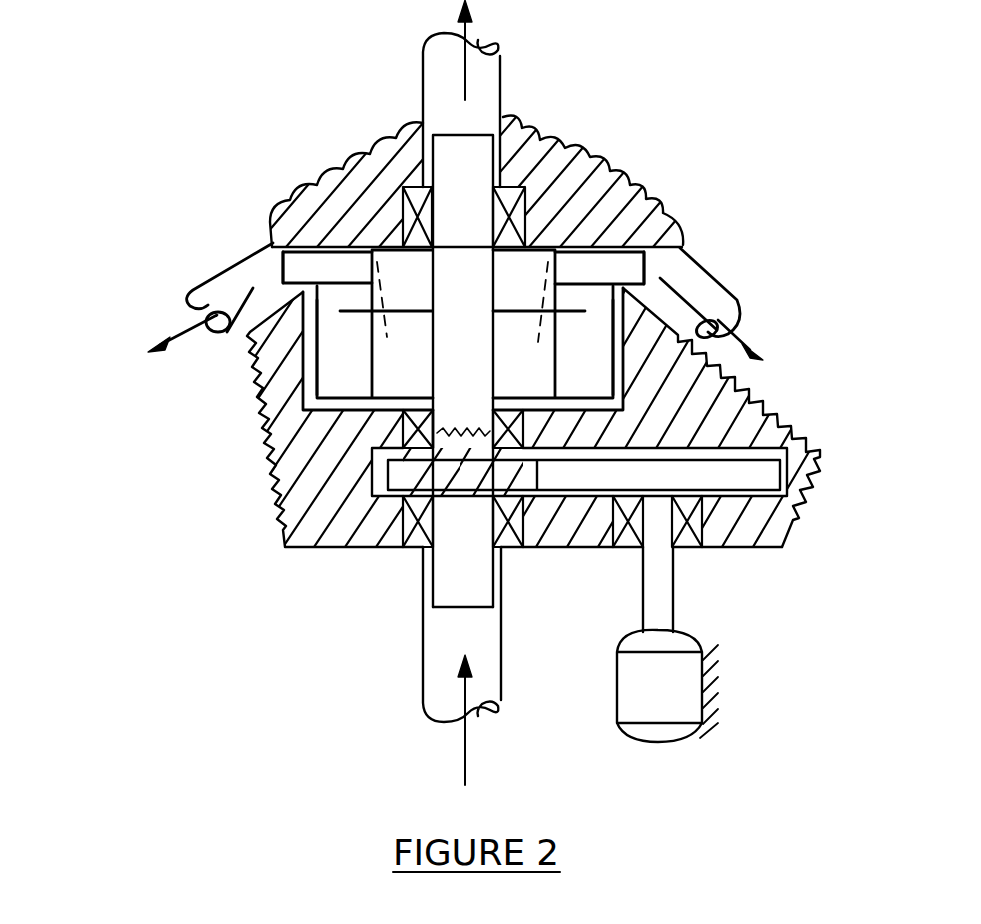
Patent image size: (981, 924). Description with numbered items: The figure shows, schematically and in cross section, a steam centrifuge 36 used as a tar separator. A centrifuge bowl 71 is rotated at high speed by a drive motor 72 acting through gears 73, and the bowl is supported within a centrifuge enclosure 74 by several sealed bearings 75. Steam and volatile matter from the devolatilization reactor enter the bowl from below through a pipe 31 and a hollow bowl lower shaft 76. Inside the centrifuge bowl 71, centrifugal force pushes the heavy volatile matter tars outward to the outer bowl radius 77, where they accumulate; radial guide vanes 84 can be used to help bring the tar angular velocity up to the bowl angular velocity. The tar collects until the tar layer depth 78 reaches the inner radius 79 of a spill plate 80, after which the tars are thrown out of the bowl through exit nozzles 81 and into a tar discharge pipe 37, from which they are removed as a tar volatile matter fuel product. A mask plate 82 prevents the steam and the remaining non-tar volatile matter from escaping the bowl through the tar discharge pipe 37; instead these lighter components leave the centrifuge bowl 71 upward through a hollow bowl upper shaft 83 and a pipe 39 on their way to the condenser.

The pipe 31 is at (430, 690).
The steam centrifuge 36 is at (404, 432).
The tar discharge pipe 37 is at (230, 280).
The pipe 39 is at (503, 80).
The centrifuge bowl 71 is at (587, 362).
The drive motor 72 is at (648, 710).
The gears 73 is at (745, 470).
The centrifuge enclosure 74 is at (342, 505).
The sealed bearings 75 is at (527, 197).
The hollow bowl lower shaft 76 is at (447, 590).
The outer bowl radius 77 is at (383, 378).
The tar layer depth 78 is at (388, 374).
The inner radius 79 is at (362, 276).
The spill plate 80 is at (623, 273).
The exit nozzles 81 is at (295, 274).
The mask plate 82 is at (503, 308).
The hollow bowl upper shaft 83 is at (462, 163).
The radial guide vanes 84 is at (577, 340).